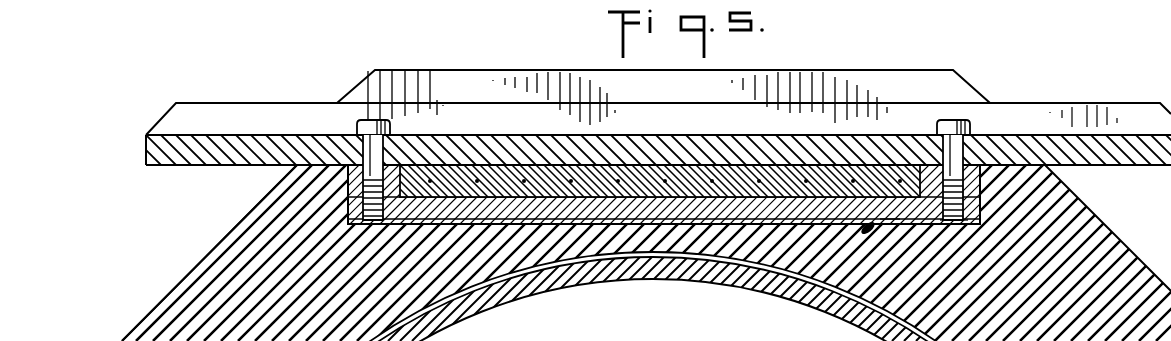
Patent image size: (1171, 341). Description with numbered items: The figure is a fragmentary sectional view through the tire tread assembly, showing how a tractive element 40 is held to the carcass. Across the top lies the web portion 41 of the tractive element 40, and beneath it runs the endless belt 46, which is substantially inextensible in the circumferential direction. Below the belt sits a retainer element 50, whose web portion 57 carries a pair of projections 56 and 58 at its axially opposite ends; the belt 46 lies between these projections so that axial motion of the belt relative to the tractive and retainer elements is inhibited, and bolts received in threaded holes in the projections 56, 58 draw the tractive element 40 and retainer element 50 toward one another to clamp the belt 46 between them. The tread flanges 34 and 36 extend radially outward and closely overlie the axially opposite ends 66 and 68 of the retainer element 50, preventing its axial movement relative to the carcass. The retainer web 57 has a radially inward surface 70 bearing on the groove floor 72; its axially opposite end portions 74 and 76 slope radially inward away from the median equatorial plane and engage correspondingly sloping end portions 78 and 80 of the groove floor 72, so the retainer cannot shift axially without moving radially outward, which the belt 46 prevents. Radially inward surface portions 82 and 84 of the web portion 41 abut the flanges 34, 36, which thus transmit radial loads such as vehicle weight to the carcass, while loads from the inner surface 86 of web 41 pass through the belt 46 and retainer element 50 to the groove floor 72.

The flange 34 is at (1063, 183).
The flange 36 is at (275, 187).
The tractive element 40 is at (427, 100).
The web portion 41 is at (677, 142).
The endless belt 46 is at (465, 188).
The retainer element 50 is at (400, 224).
The projection 56 is at (985, 188).
The web portion 57 is at (610, 208).
The projection 58 is at (355, 160).
The end of retainer element 66 is at (983, 215).
The end of retainer element 68 is at (347, 208).
The radially inward surface 70 is at (655, 213).
The groove floor 72 is at (730, 213).
The end portion of radially inward surface 74 is at (889, 219).
The end portion of radially inward surface 76 is at (430, 222).
The end portion of groove floor 78 is at (866, 232).
The end portion of groove floor 80 is at (452, 222).
The radially inward surface portion 82 is at (1012, 170).
The radially inward surface portion 84 is at (314, 158).
The inner surface 86 is at (543, 190).